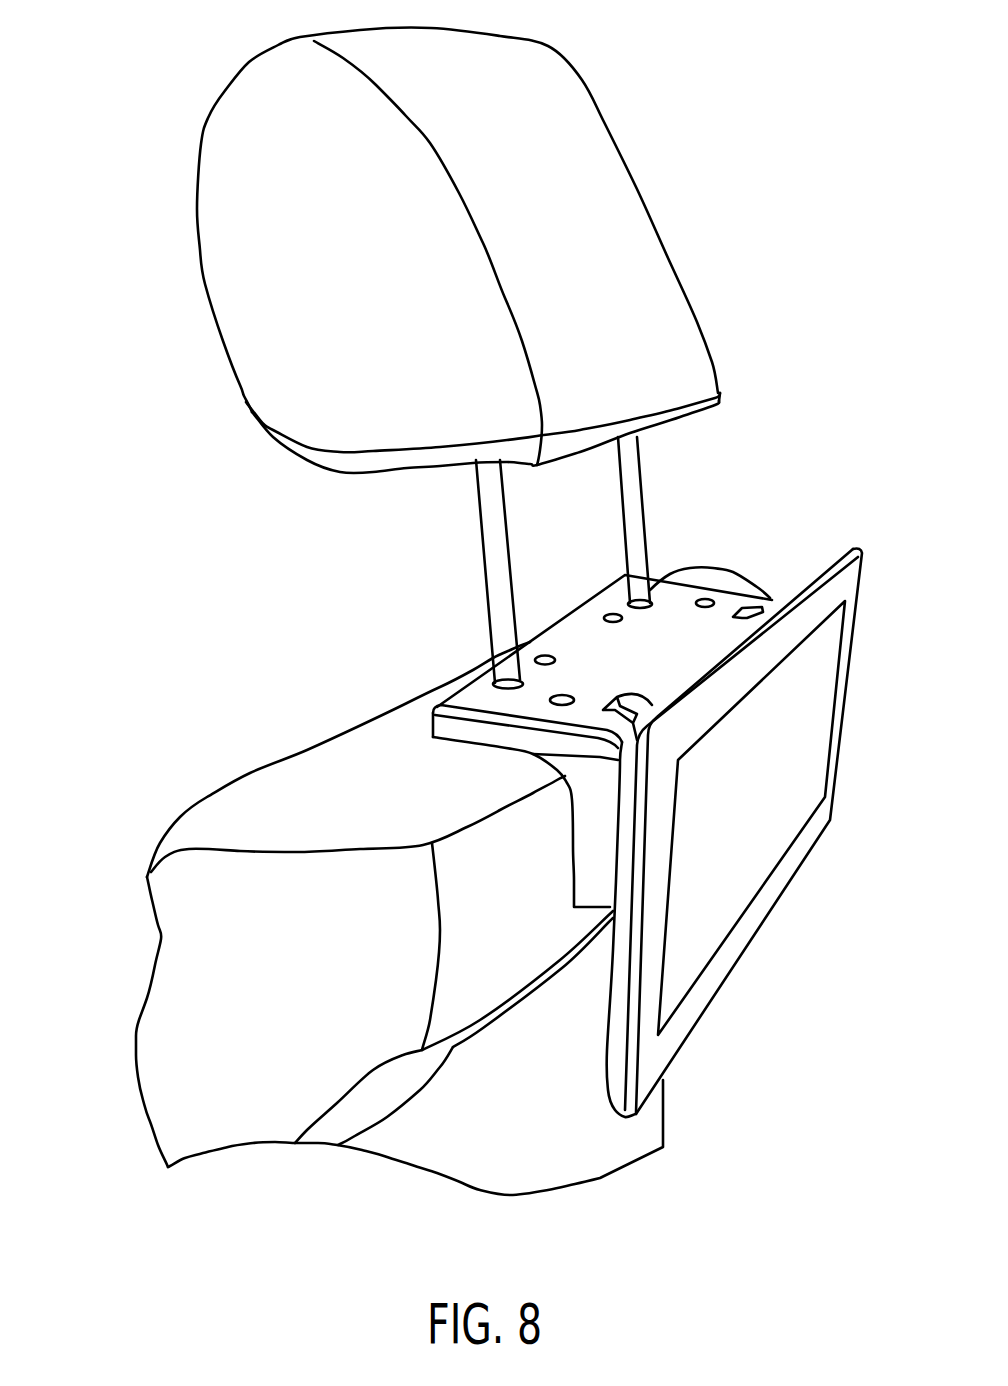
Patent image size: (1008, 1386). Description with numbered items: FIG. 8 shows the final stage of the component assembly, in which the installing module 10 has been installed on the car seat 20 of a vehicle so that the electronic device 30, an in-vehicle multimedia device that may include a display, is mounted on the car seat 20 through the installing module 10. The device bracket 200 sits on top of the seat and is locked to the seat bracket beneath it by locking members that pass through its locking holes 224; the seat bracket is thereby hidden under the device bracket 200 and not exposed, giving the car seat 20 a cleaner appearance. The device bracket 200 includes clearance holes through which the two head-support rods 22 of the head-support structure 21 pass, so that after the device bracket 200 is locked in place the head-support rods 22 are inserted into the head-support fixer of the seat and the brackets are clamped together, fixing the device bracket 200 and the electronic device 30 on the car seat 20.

The installing module 10 is at (614, 810).
The car seat 20 is at (209, 933).
The head-support structure 21 is at (601, 220).
The head-support rod 22 is at (633, 510).
The locking hole 224 is at (497, 688).
The device bracket 200 is at (673, 630).
The electronic device 30 is at (745, 850).